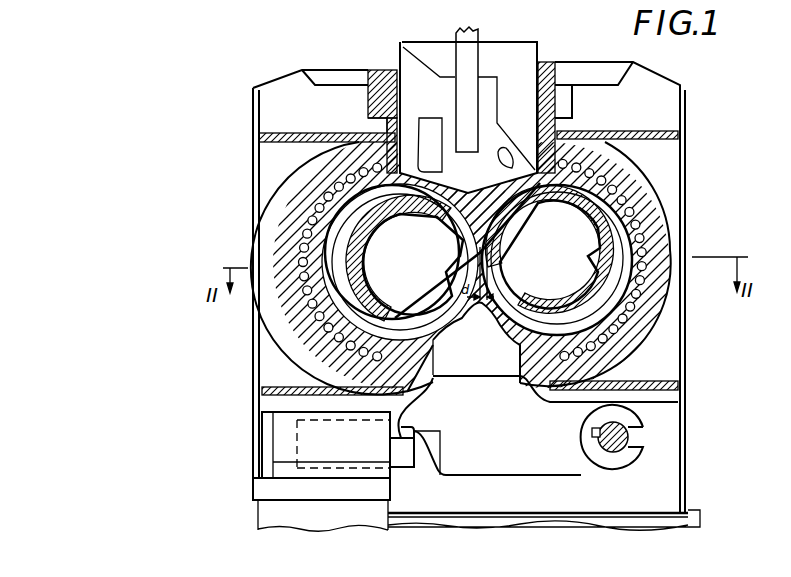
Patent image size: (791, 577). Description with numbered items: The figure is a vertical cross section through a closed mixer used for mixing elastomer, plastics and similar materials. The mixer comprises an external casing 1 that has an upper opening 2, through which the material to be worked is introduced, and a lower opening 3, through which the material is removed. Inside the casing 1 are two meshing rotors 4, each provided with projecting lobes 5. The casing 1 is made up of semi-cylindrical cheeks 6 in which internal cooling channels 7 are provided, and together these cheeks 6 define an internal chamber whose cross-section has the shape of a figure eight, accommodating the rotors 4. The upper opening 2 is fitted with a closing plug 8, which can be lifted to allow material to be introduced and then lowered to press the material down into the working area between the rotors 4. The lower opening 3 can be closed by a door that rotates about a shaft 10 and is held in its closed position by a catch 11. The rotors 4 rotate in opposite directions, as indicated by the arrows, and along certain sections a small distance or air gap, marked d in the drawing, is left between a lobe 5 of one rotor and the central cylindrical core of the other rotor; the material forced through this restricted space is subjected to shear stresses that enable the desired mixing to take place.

The external casing 1 is at (670, 157).
The upper opening 2 is at (542, 57).
The lower opening 3 is at (437, 480).
The meshing rotors 4 is at (373, 283).
The projecting lobes 5 is at (385, 193).
The semi-cylindrical cheeks 6 is at (337, 365).
The internal cooling channels 7 is at (318, 333).
The closing plug 8 is at (407, 68).
The shaft 10 is at (625, 450).
The catch 11 is at (360, 458).